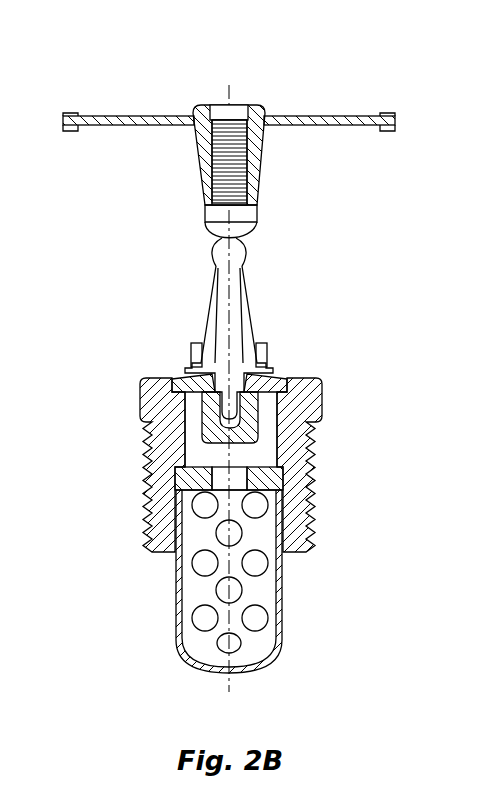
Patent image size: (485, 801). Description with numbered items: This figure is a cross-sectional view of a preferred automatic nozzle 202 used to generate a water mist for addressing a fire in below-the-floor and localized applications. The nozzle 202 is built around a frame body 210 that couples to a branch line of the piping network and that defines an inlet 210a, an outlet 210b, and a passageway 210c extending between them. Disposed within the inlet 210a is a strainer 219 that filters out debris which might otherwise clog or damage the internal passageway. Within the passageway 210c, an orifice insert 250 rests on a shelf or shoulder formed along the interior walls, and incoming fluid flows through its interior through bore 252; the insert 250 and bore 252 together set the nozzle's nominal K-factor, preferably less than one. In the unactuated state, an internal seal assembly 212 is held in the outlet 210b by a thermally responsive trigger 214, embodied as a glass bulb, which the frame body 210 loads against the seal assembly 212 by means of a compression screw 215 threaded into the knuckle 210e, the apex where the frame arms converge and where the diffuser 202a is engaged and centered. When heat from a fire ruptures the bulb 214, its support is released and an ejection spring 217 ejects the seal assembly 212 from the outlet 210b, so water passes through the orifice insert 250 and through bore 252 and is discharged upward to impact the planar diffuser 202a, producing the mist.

The automatic nozzle 202 is at (280, 345).
The diffuser 202a is at (360, 114).
The frame body 210 is at (313, 474).
The inlet 210a is at (287, 565).
The outlet 210b is at (190, 361).
The passageway 210c is at (207, 449).
The knuckle 210e is at (257, 185).
The internal seal assembly 212 is at (278, 386).
The thermally responsive trigger 214 is at (239, 277).
The compression screw 215 is at (240, 119).
The ejection spring 217 is at (200, 373).
The strainer 219 is at (283, 592).
The orifice insert 250 is at (284, 474).
The through bore 252 is at (241, 466).